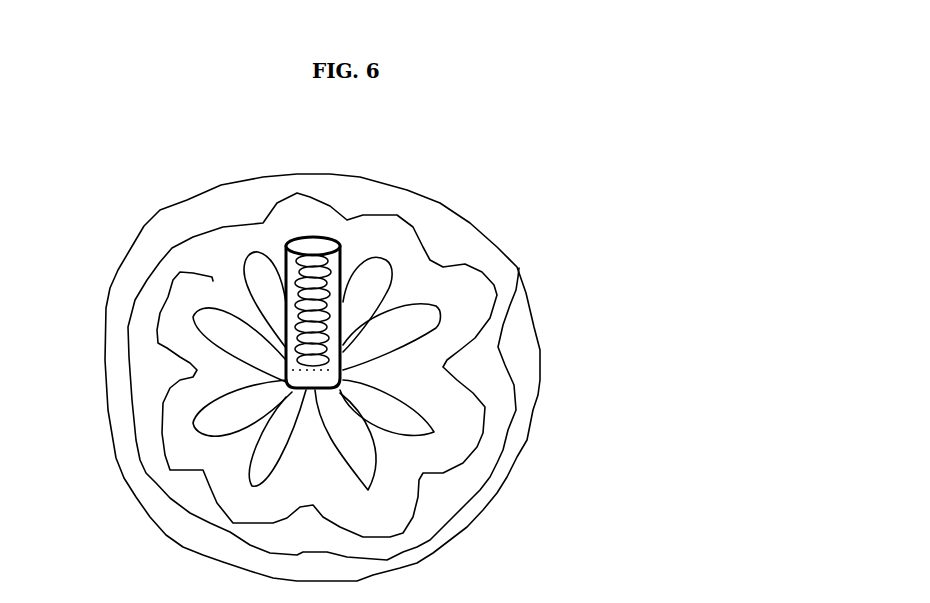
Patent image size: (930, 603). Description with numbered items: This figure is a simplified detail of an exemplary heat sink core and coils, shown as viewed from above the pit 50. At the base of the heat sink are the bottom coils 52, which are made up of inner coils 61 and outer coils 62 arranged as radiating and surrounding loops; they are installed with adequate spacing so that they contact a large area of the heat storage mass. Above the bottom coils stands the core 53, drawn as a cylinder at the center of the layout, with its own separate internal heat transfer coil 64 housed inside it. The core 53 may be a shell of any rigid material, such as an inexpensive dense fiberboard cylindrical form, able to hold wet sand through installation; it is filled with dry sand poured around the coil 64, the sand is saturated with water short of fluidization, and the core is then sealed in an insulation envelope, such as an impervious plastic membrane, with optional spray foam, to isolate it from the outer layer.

The pit 50 is at (380, 175).
The heat sink bottom coils 52 is at (195, 313).
The core 53 is at (343, 245).
The inner coils 61 is at (394, 277).
The outer coils 62 is at (510, 322).
The internal heat transfer coil 64 is at (298, 278).